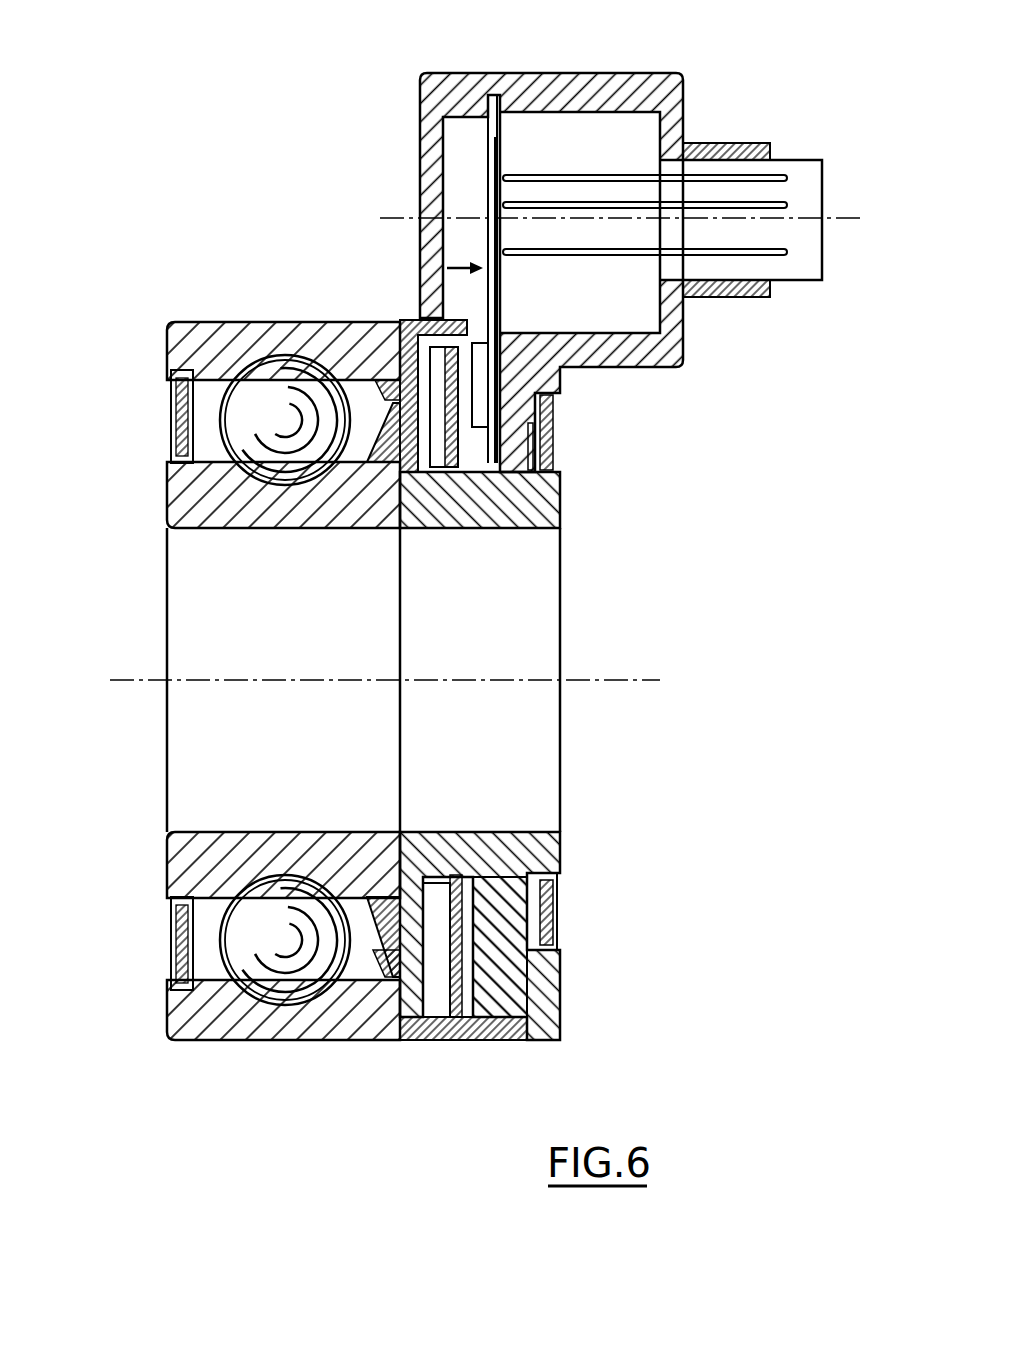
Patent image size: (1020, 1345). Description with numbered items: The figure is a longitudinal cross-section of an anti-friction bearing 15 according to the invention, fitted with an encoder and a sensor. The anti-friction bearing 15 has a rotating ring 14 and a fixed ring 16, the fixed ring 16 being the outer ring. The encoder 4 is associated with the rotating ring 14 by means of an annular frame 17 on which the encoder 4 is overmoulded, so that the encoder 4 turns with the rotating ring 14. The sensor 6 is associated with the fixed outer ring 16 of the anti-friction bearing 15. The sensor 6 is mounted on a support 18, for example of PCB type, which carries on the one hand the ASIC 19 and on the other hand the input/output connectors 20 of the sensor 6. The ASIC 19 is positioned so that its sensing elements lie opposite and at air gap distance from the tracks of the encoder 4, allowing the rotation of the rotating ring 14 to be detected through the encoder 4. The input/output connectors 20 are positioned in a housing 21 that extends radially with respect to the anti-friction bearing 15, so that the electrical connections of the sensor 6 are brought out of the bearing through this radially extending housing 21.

The encoder 4 is at (457, 1000).
The sensor 6 is at (447, 268).
The rotating ring 14 is at (190, 507).
The anti-friction bearing 15 is at (633, 630).
The fixed ring 16 is at (217, 337).
The annular frame 17 is at (437, 993).
The support 18 is at (503, 148).
The ASIC 19 is at (487, 343).
The input/output connectors 20 is at (735, 257).
The housing 21 is at (597, 143).